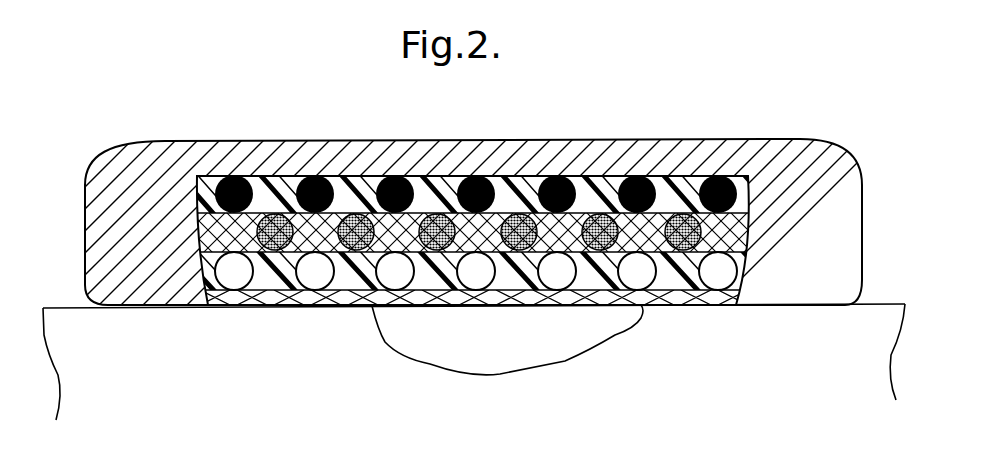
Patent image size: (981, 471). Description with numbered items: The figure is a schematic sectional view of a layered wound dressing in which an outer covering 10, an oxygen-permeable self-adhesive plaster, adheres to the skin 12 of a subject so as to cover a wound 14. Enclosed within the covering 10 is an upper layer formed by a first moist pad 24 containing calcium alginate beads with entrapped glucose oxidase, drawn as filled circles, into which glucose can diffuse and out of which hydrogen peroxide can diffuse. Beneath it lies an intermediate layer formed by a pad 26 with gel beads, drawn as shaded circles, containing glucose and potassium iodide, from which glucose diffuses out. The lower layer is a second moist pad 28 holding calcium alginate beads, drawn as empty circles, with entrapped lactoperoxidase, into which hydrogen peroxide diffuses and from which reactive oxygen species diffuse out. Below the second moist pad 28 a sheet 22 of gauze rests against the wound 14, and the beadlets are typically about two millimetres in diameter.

The covering 10 is at (803, 167).
The skin 12 is at (795, 357).
The wound 14 is at (567, 340).
The sheet of gauze 22 is at (687, 302).
The first moist pad 24 is at (525, 176).
The pad 26 is at (598, 215).
The second moist pad 28 is at (697, 264).